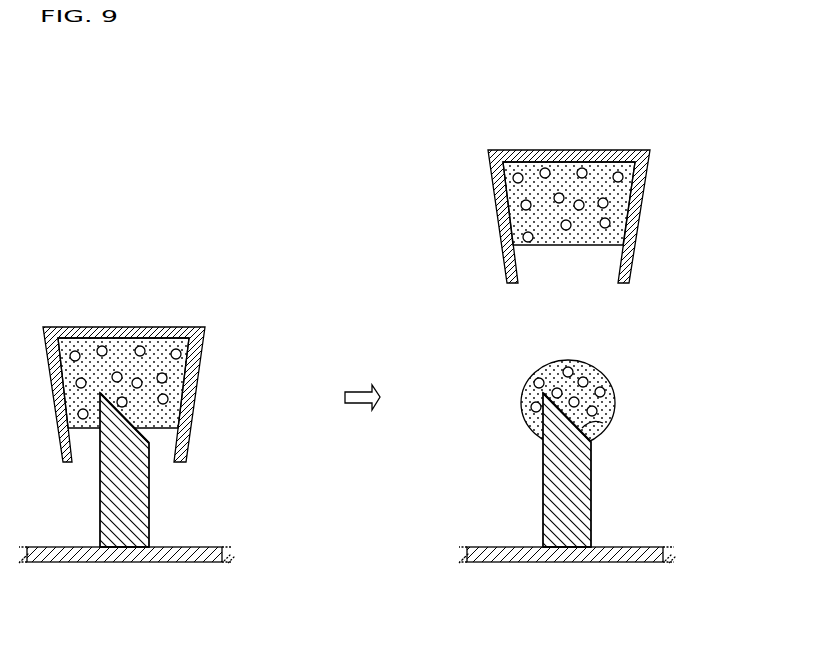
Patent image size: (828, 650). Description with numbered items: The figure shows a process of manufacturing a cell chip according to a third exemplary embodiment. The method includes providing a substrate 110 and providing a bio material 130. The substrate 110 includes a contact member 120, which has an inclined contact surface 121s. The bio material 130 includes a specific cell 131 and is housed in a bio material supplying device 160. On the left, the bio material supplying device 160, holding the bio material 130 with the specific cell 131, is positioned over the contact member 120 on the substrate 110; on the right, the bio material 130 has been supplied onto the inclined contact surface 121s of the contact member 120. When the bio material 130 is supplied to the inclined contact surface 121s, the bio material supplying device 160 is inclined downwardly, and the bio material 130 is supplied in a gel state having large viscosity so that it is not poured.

The substrate 110 is at (128, 562).
The contact member 120 is at (172, 505).
The inclined contact surface 121s is at (137, 419).
The bio material 130 is at (188, 346).
The specific cell 131 is at (140, 347).
The bio material supplying device 160 is at (202, 363).